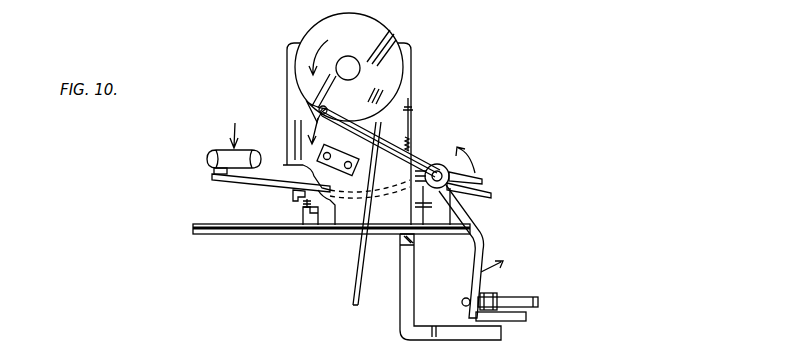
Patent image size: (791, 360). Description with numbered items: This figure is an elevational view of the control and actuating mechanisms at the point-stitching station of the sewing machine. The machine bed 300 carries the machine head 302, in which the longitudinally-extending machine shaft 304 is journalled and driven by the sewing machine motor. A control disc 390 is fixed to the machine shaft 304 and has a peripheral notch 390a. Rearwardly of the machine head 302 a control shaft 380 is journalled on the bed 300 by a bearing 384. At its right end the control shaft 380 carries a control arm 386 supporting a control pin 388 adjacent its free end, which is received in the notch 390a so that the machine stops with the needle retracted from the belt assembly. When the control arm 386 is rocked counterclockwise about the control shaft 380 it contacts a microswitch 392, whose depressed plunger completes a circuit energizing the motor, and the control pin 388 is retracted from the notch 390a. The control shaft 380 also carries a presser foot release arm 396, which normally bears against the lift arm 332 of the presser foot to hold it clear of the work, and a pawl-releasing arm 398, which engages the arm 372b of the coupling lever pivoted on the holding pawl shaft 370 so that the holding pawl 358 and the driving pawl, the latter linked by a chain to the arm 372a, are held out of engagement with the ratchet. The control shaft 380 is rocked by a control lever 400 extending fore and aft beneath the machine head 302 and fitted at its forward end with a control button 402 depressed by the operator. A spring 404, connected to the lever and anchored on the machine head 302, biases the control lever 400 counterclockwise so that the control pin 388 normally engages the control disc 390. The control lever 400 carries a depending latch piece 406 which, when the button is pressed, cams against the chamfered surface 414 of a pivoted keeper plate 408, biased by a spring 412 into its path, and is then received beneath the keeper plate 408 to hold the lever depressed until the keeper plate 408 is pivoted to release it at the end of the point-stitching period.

The machine bed 300 is at (193, 228).
The machine head 302 is at (410, 52).
The machine shaft 304 is at (347, 57).
The lift arm 332 is at (492, 196).
The holding pawl 358 is at (527, 316).
The holding pawl shaft 370 is at (493, 296).
The arm of coupling lever 372a is at (537, 300).
The arm of coupling lever 372b is at (463, 299).
The control shaft 380 is at (450, 170).
The bearing 384 is at (425, 203).
The control arm 386 is at (412, 138).
The control pin 388 is at (330, 110).
The control disc 390 is at (317, 33).
The peripheral notch 390a is at (307, 102).
The microswitch 392 is at (372, 150).
The presser foot release arm 396 is at (483, 182).
The pawl-releasing arm 398 is at (486, 253).
The control lever 400 is at (212, 178).
The control button 402 is at (208, 150).
The spring 404 is at (414, 120).
The latch piece 406 is at (292, 193).
The keeper plate 408 is at (316, 222).
The spring 412 is at (328, 195).
The chamfered surface 414 is at (306, 212).